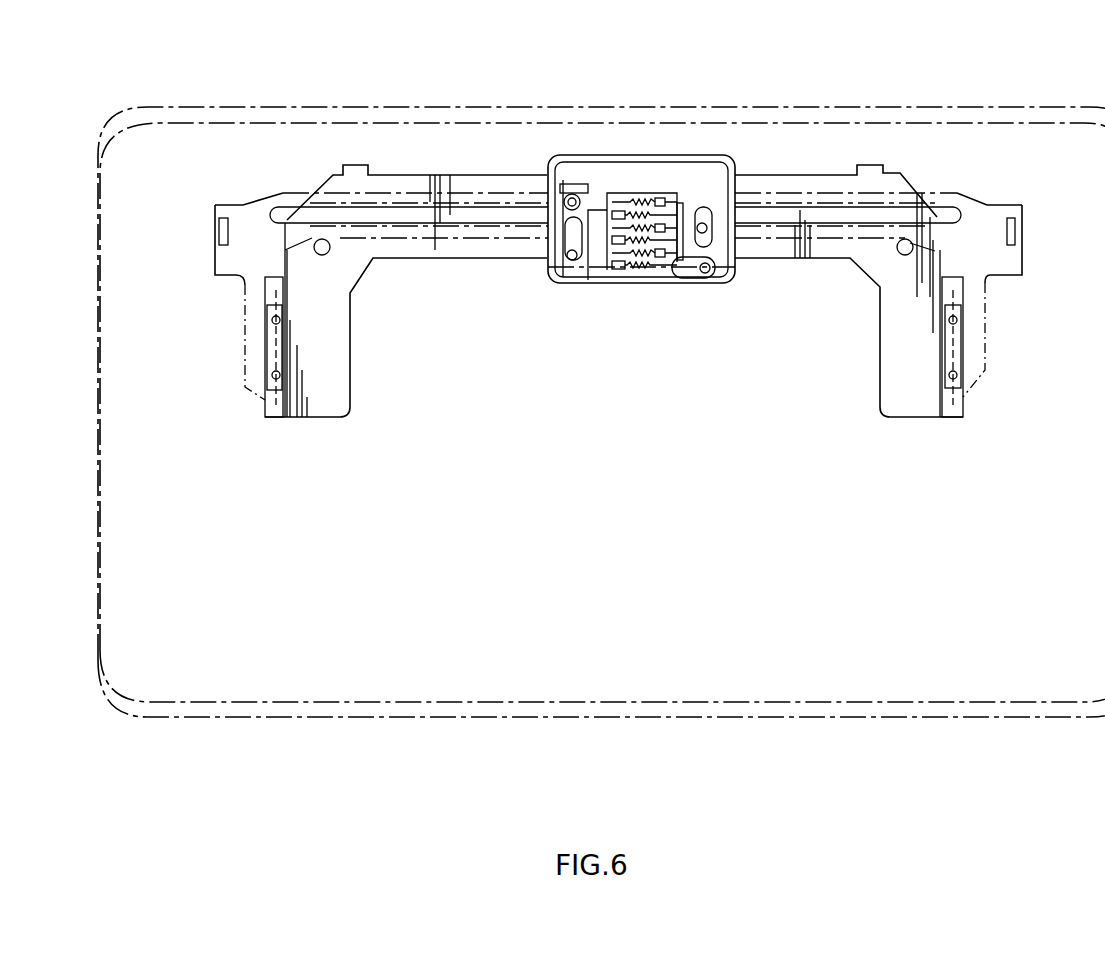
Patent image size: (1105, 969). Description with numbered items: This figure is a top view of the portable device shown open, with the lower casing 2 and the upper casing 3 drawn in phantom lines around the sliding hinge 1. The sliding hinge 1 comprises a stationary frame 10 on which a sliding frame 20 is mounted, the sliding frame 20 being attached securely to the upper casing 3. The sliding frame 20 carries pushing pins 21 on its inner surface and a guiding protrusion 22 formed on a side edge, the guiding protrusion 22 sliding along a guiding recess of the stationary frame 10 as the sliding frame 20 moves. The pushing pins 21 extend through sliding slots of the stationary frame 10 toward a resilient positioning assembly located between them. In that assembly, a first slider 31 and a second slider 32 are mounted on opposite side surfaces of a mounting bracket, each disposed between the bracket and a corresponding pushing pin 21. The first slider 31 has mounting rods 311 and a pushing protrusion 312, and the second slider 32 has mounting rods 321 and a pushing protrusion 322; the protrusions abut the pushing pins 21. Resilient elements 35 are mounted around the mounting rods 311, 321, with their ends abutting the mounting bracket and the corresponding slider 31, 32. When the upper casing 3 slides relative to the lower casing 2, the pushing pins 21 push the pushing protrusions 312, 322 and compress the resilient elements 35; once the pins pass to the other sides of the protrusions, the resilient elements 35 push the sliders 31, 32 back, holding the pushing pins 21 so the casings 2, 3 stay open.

The sliding hinge 1 is at (268, 182).
The lower casing 2 is at (978, 717).
The upper casing 3 is at (997, 107).
The stationary frame 10 is at (473, 180).
The sliding frame 20 is at (995, 210).
The pushing pin 21 is at (570, 257).
The guiding protrusion 22 is at (978, 370).
The first slider 31 is at (598, 267).
The mounting rods 311 is at (618, 267).
The pushing protrusion 312 is at (585, 230).
The second slider 32 is at (677, 200).
The mounting rods 321 is at (660, 200).
The pushing protrusion 322 is at (693, 228).
The resilient elements 35 is at (637, 200).